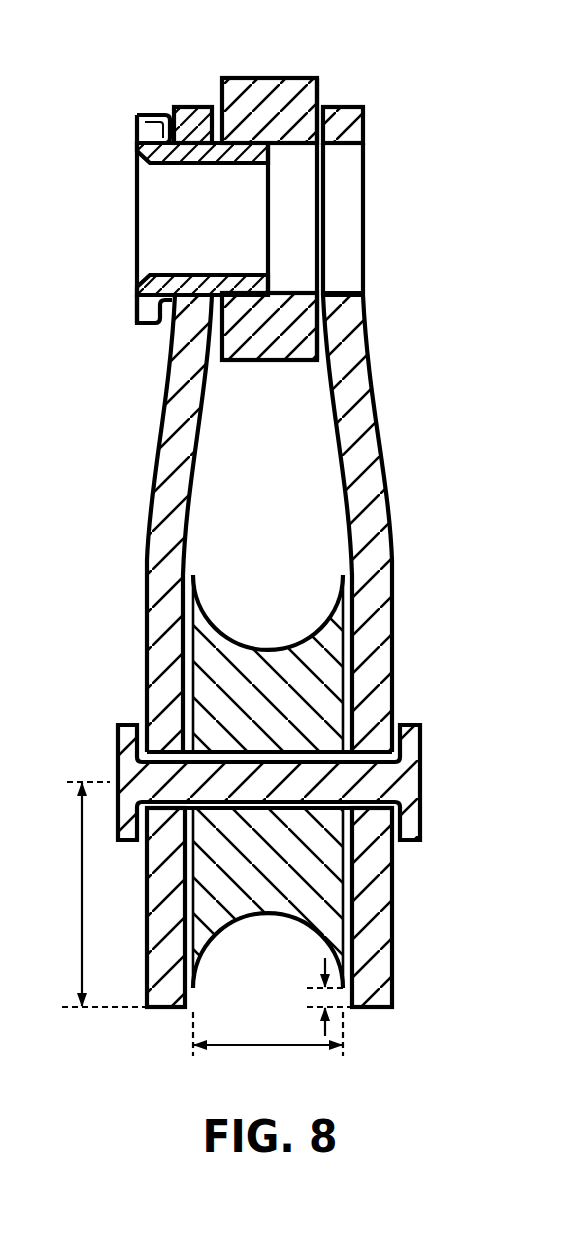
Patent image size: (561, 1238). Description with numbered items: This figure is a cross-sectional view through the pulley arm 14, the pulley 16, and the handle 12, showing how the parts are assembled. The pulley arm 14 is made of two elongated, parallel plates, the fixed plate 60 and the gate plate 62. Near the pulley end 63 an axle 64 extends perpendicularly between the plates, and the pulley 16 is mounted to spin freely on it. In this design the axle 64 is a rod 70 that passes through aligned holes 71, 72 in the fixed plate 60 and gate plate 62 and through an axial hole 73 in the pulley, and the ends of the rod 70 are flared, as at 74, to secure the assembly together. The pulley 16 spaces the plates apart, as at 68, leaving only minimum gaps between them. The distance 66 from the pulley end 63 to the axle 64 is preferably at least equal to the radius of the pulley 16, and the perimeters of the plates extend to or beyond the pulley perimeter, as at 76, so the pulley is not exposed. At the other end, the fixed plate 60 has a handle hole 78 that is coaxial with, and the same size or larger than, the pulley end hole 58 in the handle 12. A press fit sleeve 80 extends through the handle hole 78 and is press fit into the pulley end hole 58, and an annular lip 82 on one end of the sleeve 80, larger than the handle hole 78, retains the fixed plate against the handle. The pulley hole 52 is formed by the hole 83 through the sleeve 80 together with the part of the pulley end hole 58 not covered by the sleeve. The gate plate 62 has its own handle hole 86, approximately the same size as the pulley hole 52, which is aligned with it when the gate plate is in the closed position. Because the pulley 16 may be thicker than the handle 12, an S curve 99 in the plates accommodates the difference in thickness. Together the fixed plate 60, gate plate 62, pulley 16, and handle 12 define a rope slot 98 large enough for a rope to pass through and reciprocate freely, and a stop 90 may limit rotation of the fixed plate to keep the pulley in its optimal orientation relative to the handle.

The handle 12 is at (272, 72).
The pulley arm 14 is at (276, 524).
The pulley 16 is at (290, 935).
The pulley hole 52 is at (290, 228).
The pulley end hole 58 is at (297, 172).
The fixed plate 60 is at (145, 585).
The gate plate 62 is at (397, 585).
The pulley end 63 is at (168, 1008).
The axle 64 is at (318, 754).
The distance 66 is at (82, 883).
The spacing 68 is at (270, 1048).
The rod 70 is at (270, 776).
The hole 71 is at (143, 760).
The hole 72 is at (407, 763).
The axial hole 73 is at (335, 808).
The flared ends 74 is at (130, 725).
The plate perimeter extension 76 is at (325, 1032).
The handle hole 78 is at (200, 135).
The press fit sleeve 80 is at (181, 217).
The annular lip 82 is at (146, 323).
The hole 83 is at (157, 233).
The handle hole 86 is at (353, 205).
The stop 90 is at (167, 114).
The rope slot 98 is at (283, 512).
The S curve 99 is at (162, 442).